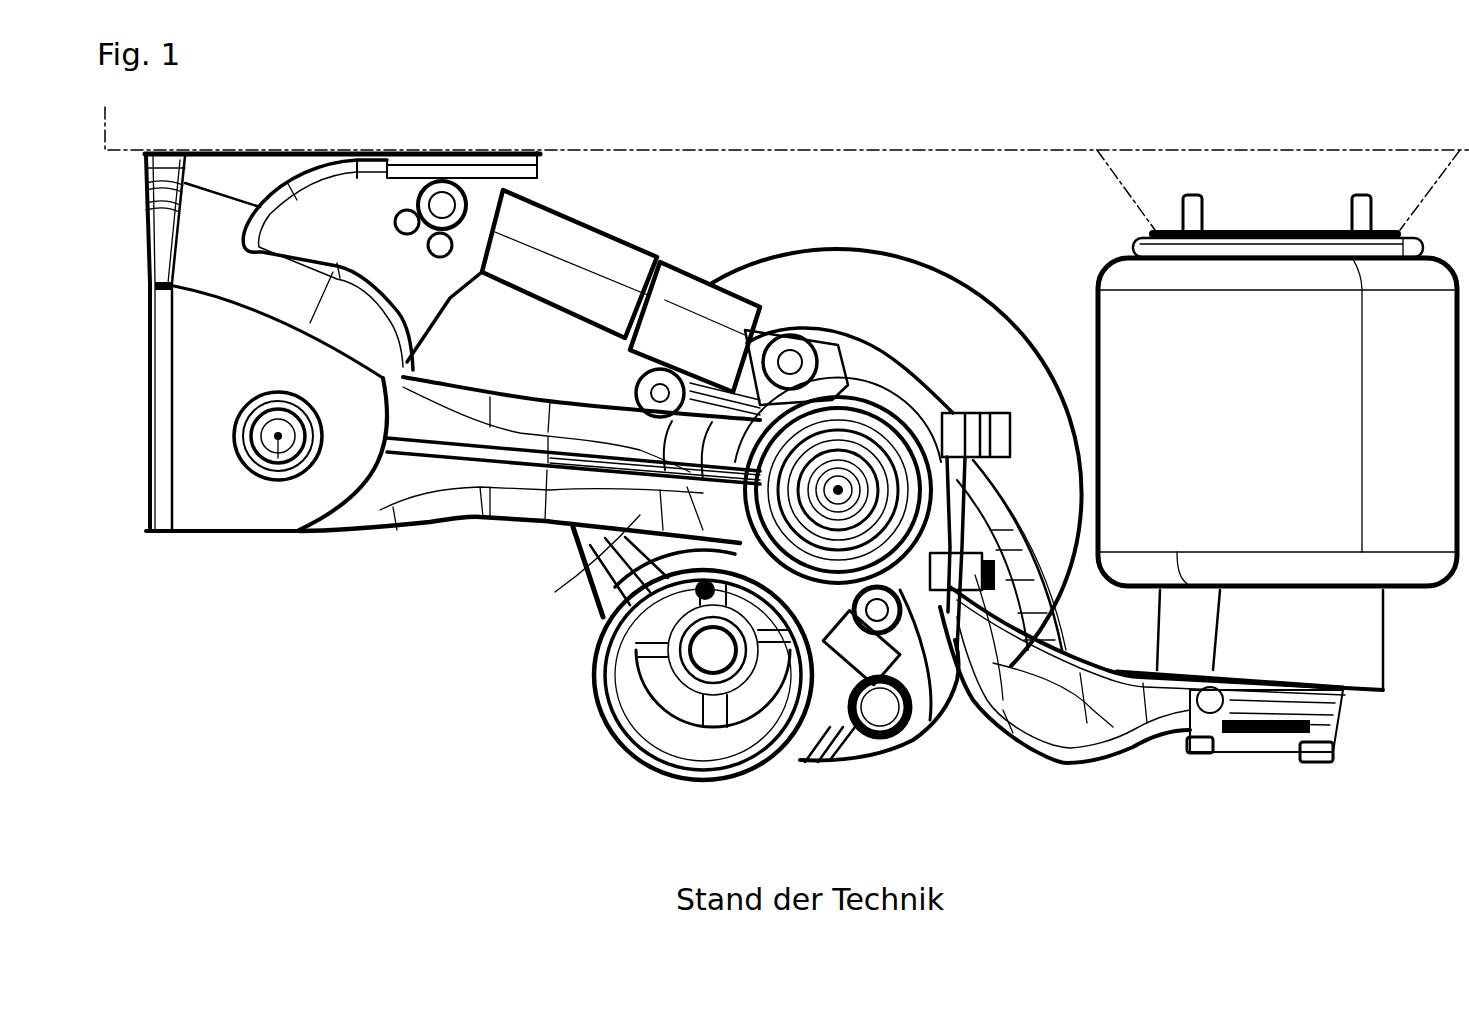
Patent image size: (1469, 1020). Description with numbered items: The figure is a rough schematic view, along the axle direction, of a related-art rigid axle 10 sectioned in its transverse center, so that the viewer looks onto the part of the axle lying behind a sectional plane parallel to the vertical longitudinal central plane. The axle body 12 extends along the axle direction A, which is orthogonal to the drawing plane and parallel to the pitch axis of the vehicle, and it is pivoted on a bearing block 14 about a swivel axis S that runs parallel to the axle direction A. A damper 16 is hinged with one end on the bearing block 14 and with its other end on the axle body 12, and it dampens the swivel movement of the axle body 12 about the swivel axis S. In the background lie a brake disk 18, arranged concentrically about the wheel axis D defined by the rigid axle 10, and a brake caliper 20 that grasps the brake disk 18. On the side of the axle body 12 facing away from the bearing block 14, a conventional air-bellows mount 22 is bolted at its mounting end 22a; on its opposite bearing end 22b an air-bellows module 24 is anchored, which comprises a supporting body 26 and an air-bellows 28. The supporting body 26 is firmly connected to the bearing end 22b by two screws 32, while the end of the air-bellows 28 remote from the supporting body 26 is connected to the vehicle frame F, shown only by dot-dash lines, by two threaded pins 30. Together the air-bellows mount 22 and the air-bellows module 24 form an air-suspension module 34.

The rigid axle 10 is at (268, 790).
The axle body 12 is at (515, 478).
The bearing block 14 is at (190, 490).
The damper 16 is at (607, 270).
The brake disk 18 is at (822, 273).
The brake caliper 20 is at (598, 582).
The air-bellows mount 22 is at (1063, 700).
The mounting end 22a is at (975, 400).
The bearing end 22b is at (1352, 727).
The air-bellows module 24 is at (1080, 231).
The supporting body 26 is at (1287, 644).
The air-bellows 28 is at (1297, 421).
The threaded pins 30 is at (1350, 208).
The screws 32 is at (1312, 757).
The air-suspension module 34 is at (1342, 786).
The swivel axis S is at (272, 463).
The axle direction A is at (840, 486).
The wheel axis D is at (907, 360).
The vehicle frame F is at (683, 150).